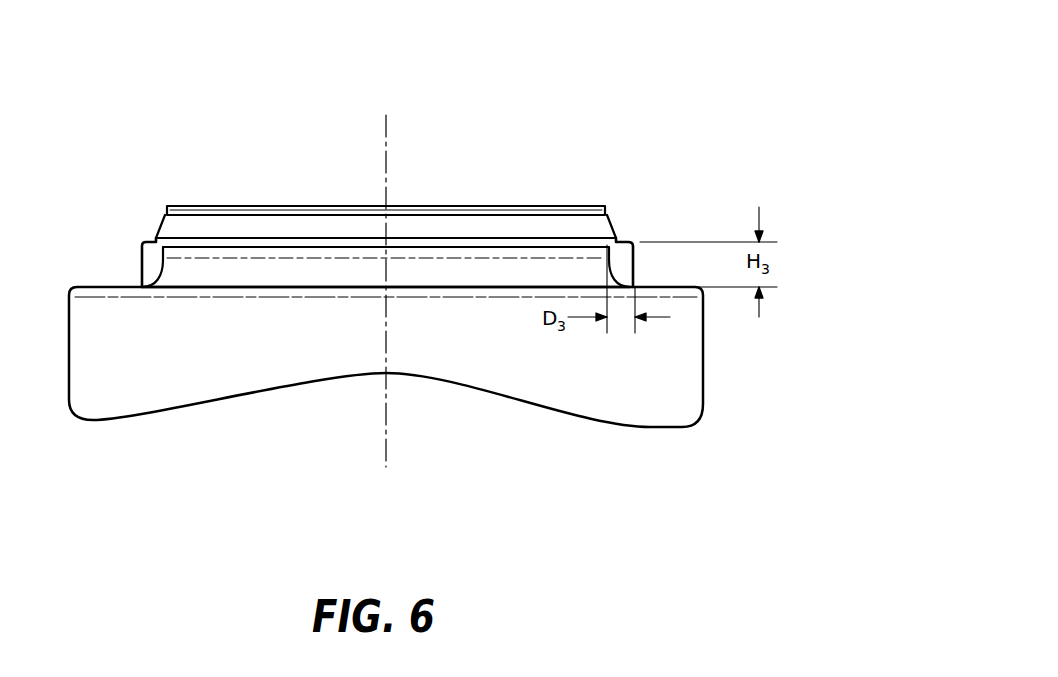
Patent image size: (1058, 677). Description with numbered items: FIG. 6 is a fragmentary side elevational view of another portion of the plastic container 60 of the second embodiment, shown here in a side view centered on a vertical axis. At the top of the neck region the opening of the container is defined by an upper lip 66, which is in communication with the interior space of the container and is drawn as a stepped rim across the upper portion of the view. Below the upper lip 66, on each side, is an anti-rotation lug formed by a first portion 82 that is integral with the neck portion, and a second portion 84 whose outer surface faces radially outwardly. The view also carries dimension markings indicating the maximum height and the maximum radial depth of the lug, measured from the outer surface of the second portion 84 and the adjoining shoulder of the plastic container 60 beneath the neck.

The plastic container 60 is at (641, 111).
The upper lip 66 is at (208, 205).
The first portion 82 is at (613, 257).
The second portion 84 is at (638, 272).